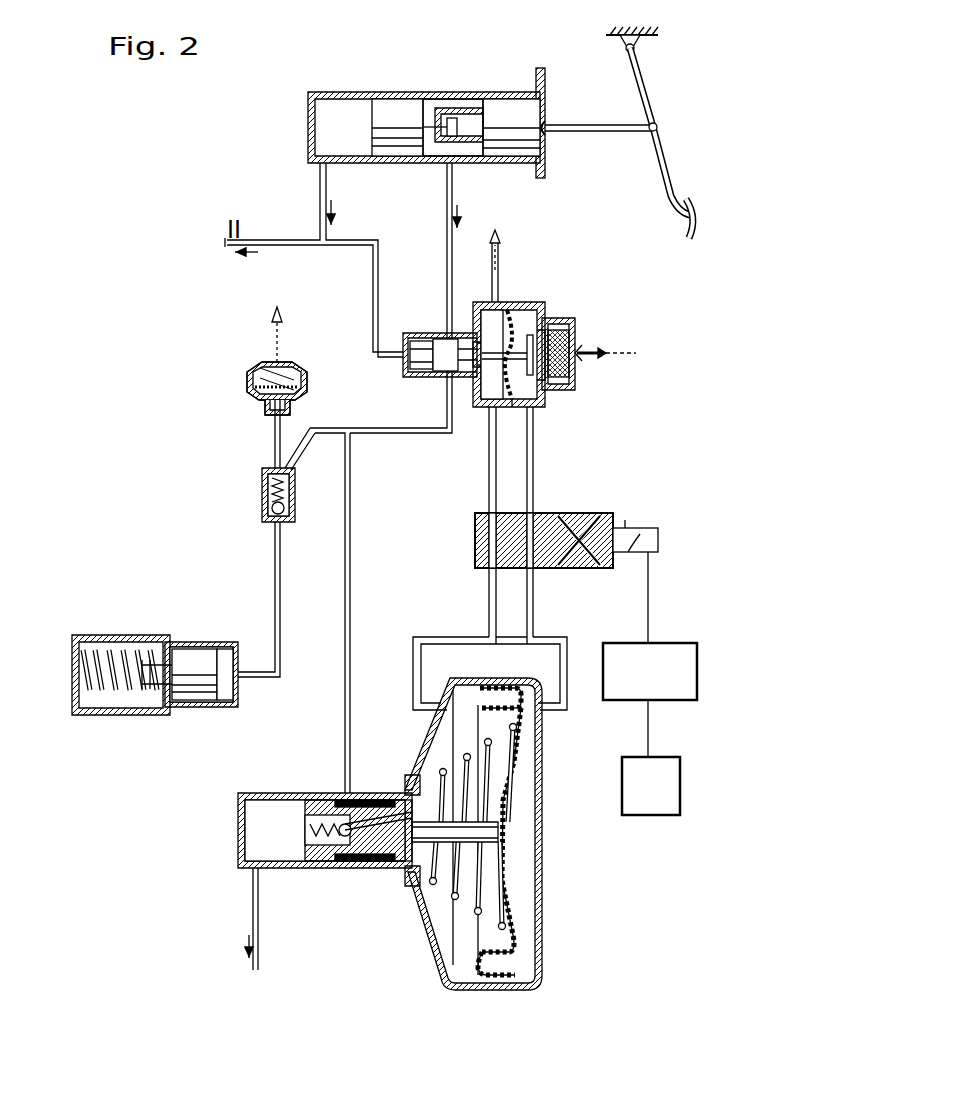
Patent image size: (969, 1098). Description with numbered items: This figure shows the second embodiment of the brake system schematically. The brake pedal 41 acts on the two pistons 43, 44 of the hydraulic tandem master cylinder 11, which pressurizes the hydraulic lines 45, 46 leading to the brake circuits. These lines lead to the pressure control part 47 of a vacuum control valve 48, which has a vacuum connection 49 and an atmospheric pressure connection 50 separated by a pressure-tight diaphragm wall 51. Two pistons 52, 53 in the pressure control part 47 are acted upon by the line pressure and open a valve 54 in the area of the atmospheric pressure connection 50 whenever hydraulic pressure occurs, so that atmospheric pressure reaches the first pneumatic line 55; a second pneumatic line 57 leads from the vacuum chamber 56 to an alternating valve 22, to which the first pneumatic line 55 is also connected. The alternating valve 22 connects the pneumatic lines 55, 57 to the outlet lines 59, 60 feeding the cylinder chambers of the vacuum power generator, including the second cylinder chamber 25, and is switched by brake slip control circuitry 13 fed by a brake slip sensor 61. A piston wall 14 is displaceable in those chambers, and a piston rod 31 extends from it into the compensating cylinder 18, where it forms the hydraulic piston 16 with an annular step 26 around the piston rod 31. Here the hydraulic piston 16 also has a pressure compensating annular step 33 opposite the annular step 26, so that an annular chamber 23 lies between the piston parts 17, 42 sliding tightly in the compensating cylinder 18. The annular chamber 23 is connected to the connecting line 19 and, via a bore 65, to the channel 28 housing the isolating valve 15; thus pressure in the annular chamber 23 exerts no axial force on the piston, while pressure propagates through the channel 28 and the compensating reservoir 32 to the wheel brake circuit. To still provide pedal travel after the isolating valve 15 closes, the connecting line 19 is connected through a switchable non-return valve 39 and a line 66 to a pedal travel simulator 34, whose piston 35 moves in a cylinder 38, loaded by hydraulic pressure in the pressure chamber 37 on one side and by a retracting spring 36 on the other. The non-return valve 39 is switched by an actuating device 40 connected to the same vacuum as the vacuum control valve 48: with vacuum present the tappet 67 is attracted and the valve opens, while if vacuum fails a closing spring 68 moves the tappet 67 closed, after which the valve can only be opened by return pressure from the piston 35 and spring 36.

The hydraulic tandem master cylinder 11 is at (340, 93).
The brake slip control circuitry 13 is at (665, 646).
The piston wall 14 is at (514, 893).
The isolating valve 15 is at (325, 814).
The hydraulic piston 16 is at (382, 840).
The piston part 17 is at (300, 860).
The compensating cylinder 18 is at (243, 873).
The connecting line 19 is at (343, 431).
The alternating valve 22 is at (607, 512).
The annular chamber 23 is at (340, 805).
The second cylinder chamber 25 is at (518, 775).
The annular step 26 is at (342, 865).
The channel 28 is at (363, 832).
The piston rod 31 is at (492, 829).
The compensating reservoir 32 is at (260, 807).
The pressure compensating annular step 33 is at (383, 798).
The pedal travel simulator 34 is at (185, 710).
The piston 35 is at (188, 657).
The retracting spring 36 is at (100, 682).
The pressure chamber 37 is at (225, 690).
The cylinder 38 is at (217, 643).
The switchable non-return valve 39 is at (260, 483).
The actuating device 40 is at (258, 355).
The brake pedal 41 is at (668, 198).
The piston part 42 is at (412, 868).
The piston 43 is at (527, 145).
The piston 44 is at (406, 145).
The hydraulic line 45 is at (453, 186).
The hydraulic line 46 is at (324, 188).
The pressure control part 47 is at (413, 335).
The vacuum control valve 48 is at (558, 310).
The vacuum connection 49 is at (500, 302).
The atmospheric pressure connection 50 is at (577, 347).
The diaphragm wall 51 is at (520, 315).
The piston 52 is at (468, 345).
The piston 53 is at (425, 357).
The valve 54 is at (521, 407).
The first pneumatic line 55 is at (530, 465).
The vacuum chamber 56 is at (487, 310).
The second pneumatic line 57 is at (490, 457).
The outlet line 59 is at (532, 600).
The outlet line 60 is at (490, 594).
The brake slip sensor 61 is at (665, 763).
The bore 65 is at (363, 798).
The line 66 is at (276, 565).
The tappet 67 is at (275, 427).
The closing spring 68 is at (248, 382).